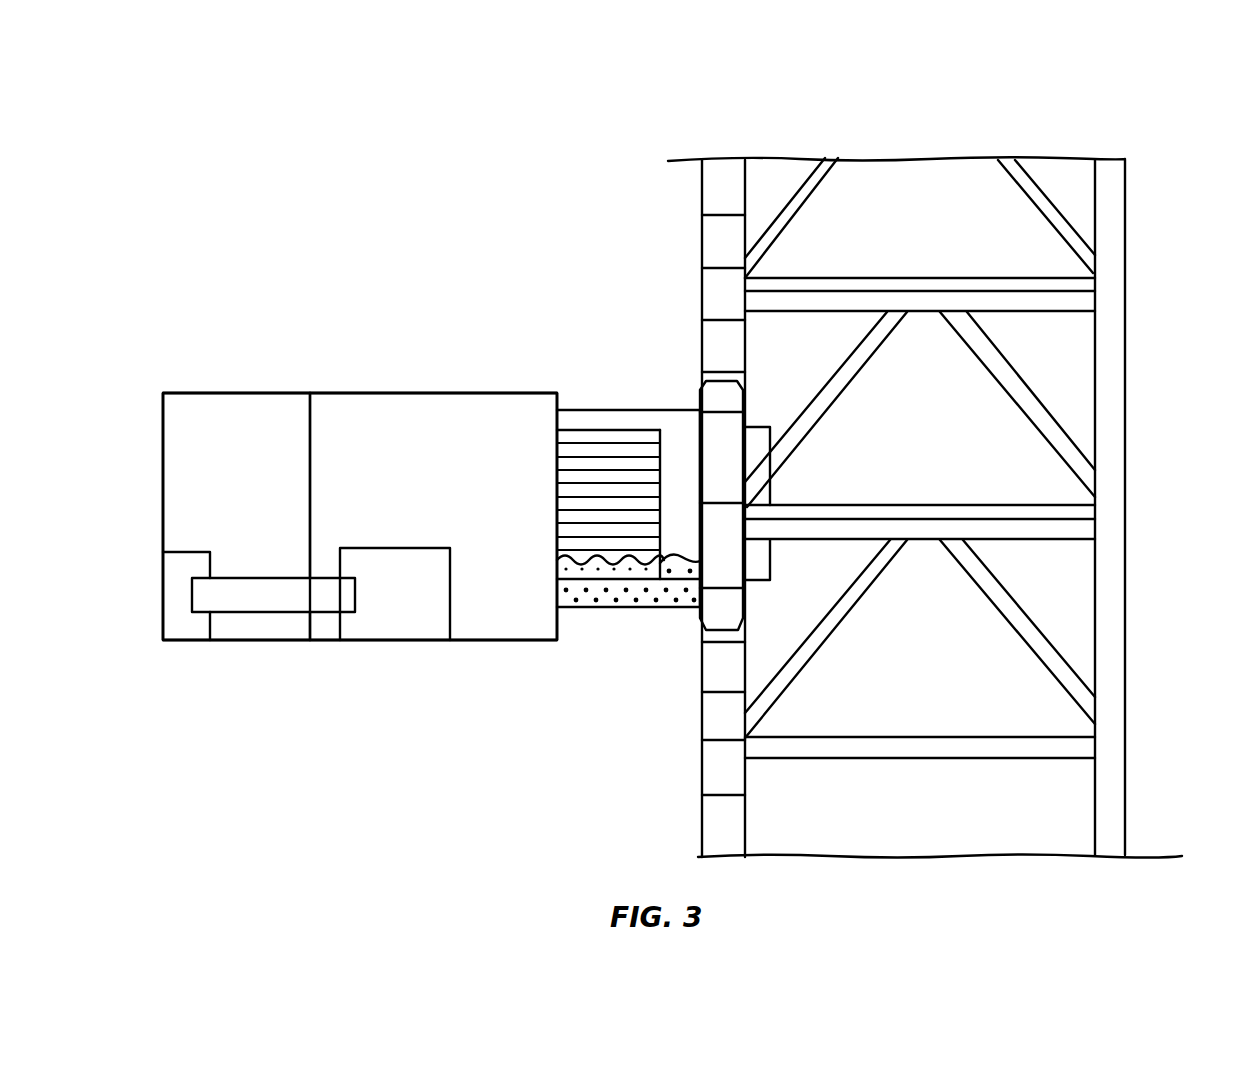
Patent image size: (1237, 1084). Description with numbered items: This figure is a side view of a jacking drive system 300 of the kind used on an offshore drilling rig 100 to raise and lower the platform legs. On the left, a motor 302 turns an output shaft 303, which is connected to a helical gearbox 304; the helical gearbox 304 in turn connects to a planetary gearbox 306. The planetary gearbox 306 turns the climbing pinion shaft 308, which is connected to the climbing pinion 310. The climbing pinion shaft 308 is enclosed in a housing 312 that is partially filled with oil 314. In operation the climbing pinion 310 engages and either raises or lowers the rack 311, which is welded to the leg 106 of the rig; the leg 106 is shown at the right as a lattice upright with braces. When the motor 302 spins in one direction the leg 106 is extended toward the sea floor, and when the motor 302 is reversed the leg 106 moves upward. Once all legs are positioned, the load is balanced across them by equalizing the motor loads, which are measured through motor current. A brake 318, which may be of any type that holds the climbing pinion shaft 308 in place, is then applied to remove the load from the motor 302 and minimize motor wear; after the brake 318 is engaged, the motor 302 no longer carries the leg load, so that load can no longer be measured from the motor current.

The offshore drilling rig 100 is at (1185, 142).
The leg 106 is at (700, 340).
The jacking drive system 300 is at (325, 329).
The motor 302 is at (438, 606).
The output shaft 303 is at (330, 613).
The helical gearbox 304 is at (263, 407).
The planetary gearbox 306 is at (377, 417).
The climbing pinion shaft 308 is at (680, 440).
The climbing pinion 310 is at (703, 627).
The rack 311 is at (752, 370).
The housing 312 is at (640, 412).
The oil 314 is at (662, 597).
The brake 318 is at (193, 620).